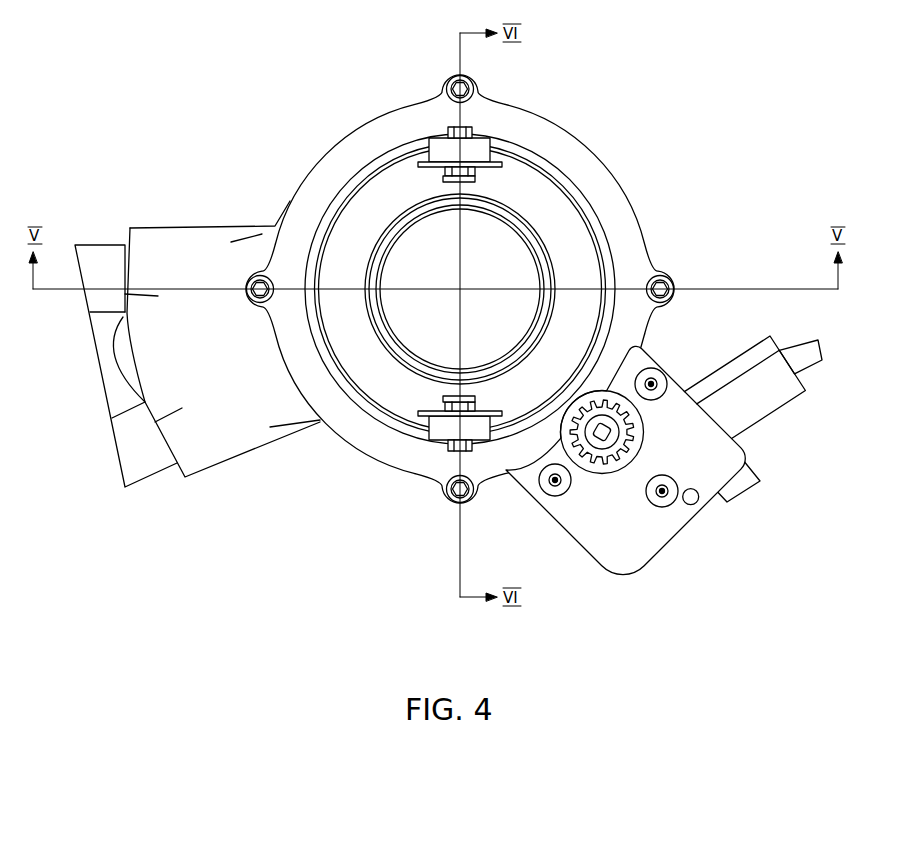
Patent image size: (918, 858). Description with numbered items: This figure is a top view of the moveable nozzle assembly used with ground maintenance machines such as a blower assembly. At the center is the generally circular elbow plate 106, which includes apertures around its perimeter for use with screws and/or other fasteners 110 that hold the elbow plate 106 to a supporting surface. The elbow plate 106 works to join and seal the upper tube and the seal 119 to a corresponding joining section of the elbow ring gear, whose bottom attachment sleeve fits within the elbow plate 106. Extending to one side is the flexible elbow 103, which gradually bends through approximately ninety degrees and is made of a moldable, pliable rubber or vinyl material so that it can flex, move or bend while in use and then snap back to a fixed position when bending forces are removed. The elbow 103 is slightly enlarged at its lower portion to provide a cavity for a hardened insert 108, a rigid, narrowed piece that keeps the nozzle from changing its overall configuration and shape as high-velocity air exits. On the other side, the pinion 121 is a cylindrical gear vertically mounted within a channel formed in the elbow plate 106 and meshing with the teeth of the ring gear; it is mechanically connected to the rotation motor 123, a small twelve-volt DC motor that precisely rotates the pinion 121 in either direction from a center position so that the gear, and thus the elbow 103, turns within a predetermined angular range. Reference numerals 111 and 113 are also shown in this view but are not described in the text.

The flexible elbow 103 is at (237, 443).
The elbow plate 106 is at (650, 555).
The hardened insert 108 is at (118, 450).
The fasteners 110 is at (652, 381).
The cover ring 111 is at (538, 158).
The clamp 113 is at (400, 403).
The seal 119 is at (526, 227).
The pinion 121 is at (580, 493).
The rotation motor 123 is at (767, 400).